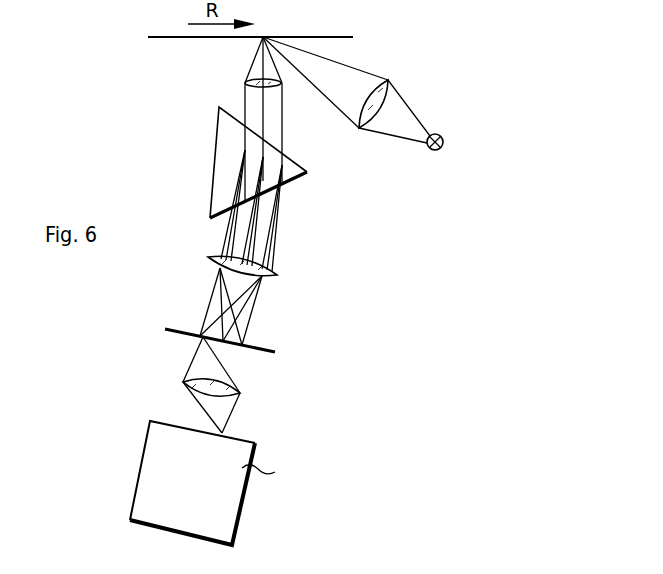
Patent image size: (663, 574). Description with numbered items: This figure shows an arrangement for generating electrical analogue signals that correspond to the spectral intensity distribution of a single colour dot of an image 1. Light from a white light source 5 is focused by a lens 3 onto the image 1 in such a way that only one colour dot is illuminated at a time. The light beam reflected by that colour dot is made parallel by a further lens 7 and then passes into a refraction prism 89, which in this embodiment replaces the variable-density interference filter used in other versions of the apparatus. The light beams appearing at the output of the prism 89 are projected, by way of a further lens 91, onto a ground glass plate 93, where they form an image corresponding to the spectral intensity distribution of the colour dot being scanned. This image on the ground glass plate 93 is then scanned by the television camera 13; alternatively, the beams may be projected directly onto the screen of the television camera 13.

The image 1 is at (150, 39).
The lens 3 is at (380, 90).
The white light source 5 is at (443, 139).
The further lens 7 is at (245, 83).
The refraction prism 89 is at (223, 165).
The lens 91 is at (208, 260).
The ground glass plate 93 is at (166, 329).
The television camera 13 is at (200, 494).